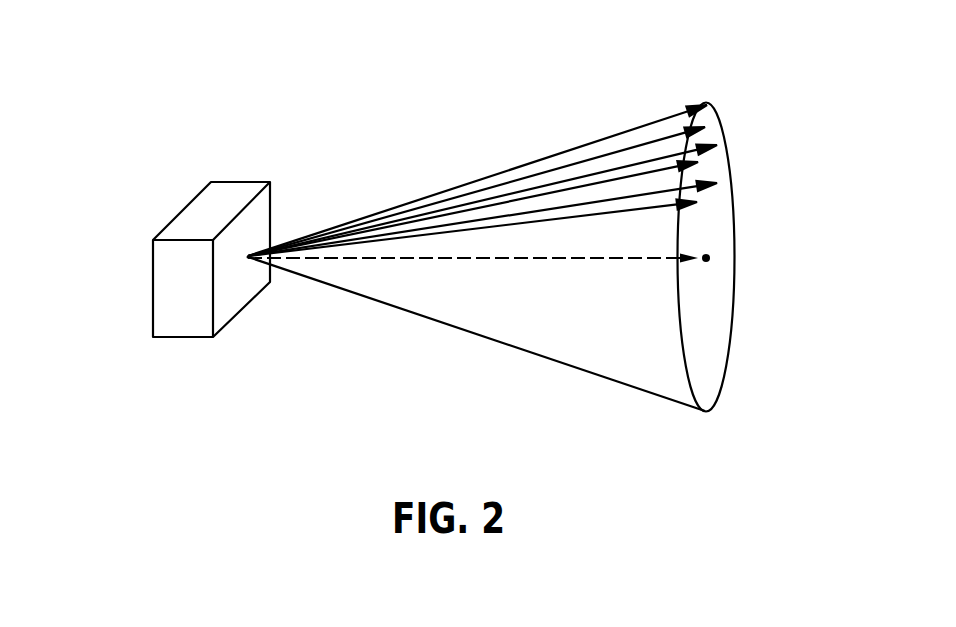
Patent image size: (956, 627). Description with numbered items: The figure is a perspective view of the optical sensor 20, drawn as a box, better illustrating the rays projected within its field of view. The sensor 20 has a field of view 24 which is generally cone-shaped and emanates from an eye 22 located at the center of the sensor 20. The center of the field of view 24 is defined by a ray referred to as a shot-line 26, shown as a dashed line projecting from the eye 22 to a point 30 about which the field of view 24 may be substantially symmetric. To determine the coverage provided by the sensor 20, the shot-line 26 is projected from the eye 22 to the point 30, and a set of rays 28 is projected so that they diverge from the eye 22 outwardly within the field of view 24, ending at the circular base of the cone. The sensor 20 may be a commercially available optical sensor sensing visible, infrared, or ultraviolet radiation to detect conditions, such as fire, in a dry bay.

The sensor 20 is at (203, 217).
The eye 22 is at (246, 282).
The field of view 24 is at (593, 347).
The shot-line 26 is at (492, 262).
The rays 28 is at (580, 203).
The point 30 is at (710, 258).